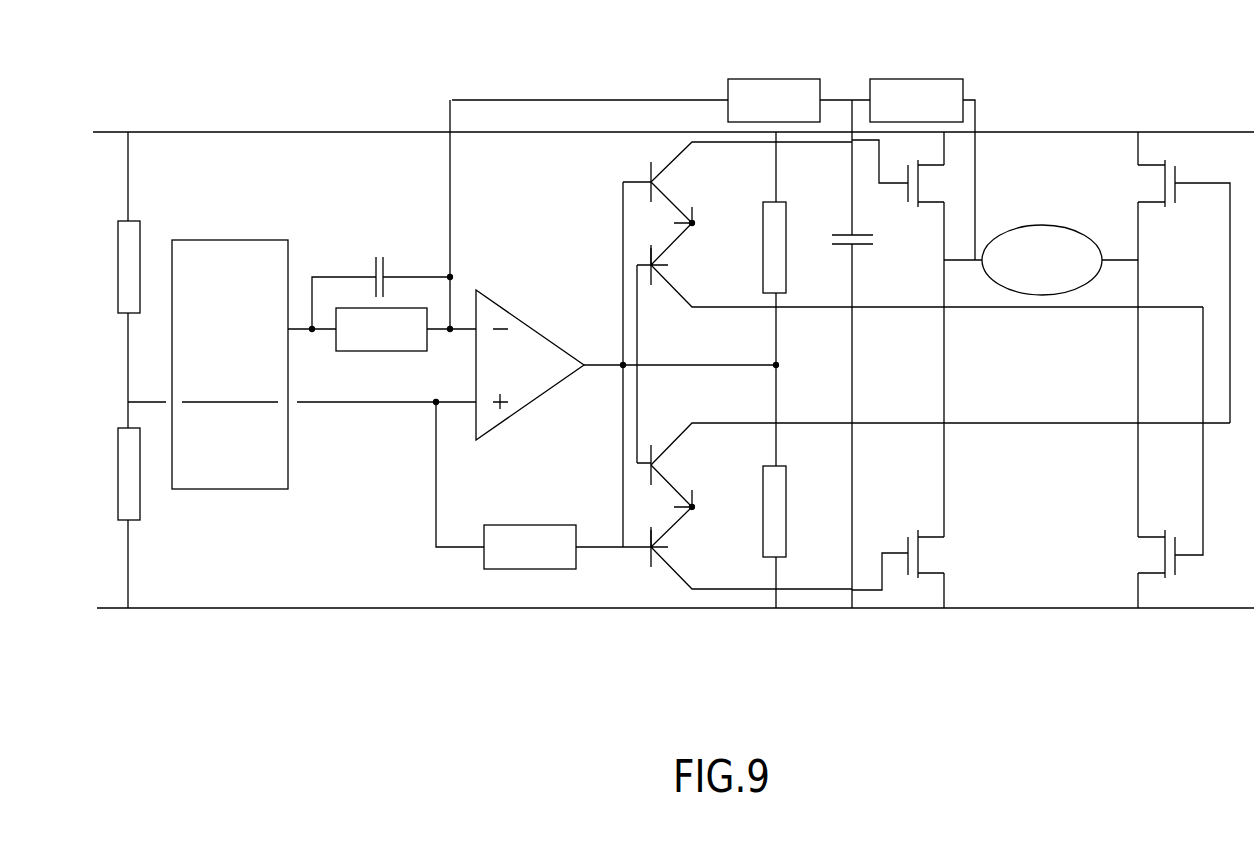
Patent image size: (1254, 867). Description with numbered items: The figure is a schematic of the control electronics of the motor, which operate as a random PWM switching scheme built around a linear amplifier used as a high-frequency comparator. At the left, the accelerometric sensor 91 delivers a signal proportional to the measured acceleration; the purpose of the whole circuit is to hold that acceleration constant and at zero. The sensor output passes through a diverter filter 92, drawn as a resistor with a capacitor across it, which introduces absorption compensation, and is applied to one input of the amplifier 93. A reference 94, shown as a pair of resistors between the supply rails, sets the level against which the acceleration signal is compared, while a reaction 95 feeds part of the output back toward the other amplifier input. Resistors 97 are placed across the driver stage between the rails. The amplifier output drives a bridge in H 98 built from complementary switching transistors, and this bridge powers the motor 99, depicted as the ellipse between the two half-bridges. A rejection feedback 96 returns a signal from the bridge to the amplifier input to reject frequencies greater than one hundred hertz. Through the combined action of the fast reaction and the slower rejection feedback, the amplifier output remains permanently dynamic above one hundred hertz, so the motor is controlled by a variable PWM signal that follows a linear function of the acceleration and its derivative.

The accelerometric sensor 91 is at (247, 321).
The diverter filter 92 is at (363, 308).
The amplifier 93 is at (522, 338).
The reference 94 is at (118, 480).
The reaction 95 is at (530, 533).
The rejection feedback 96 is at (791, 78).
The resistor 97 is at (763, 251).
The bridge in H 98 is at (901, 583).
The motor 99 is at (1040, 228).